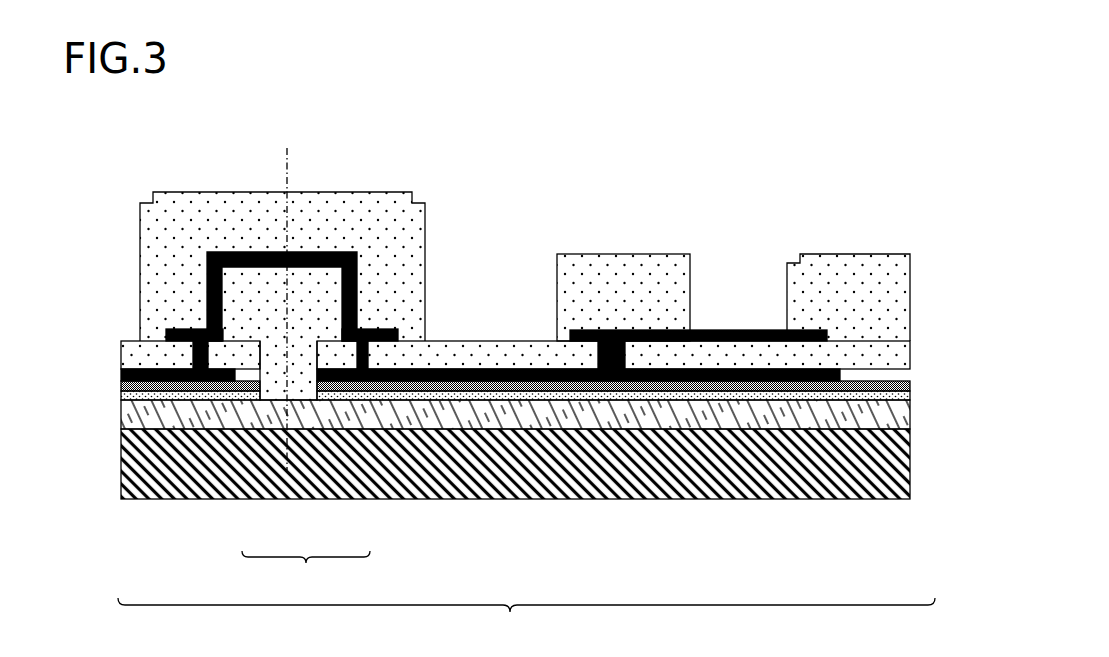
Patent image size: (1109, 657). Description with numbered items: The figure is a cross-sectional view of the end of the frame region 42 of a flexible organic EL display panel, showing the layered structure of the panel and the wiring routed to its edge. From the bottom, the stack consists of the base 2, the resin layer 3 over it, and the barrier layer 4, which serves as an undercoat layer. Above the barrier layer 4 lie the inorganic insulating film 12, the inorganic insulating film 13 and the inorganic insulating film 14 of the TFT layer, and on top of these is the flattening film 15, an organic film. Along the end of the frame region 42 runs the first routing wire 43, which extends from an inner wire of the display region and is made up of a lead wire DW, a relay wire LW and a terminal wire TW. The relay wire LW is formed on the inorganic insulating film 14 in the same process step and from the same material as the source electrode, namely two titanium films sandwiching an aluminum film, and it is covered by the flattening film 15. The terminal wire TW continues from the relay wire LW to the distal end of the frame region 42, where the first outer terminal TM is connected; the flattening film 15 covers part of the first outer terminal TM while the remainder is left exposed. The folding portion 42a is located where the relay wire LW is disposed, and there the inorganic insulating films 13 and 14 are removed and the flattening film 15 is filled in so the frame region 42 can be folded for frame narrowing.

The base 2 is at (481, 464).
The resin layer 3 is at (125, 458).
The barrier layer 4 is at (121, 413).
The inorganic insulating film 12 is at (121, 395).
The inorganic insulating film 13 is at (120, 385).
The inorganic insulating film 14 is at (134, 356).
The flattening film 15 is at (155, 242).
The frame region 42 is at (526, 621).
The folding portion 42a is at (290, 156).
The first routing wire 43 is at (306, 573).
The first outer terminal TM is at (750, 330).
The lead wire DW is at (233, 370).
The relay wire LW is at (345, 293).
The terminal wire TW is at (467, 375).